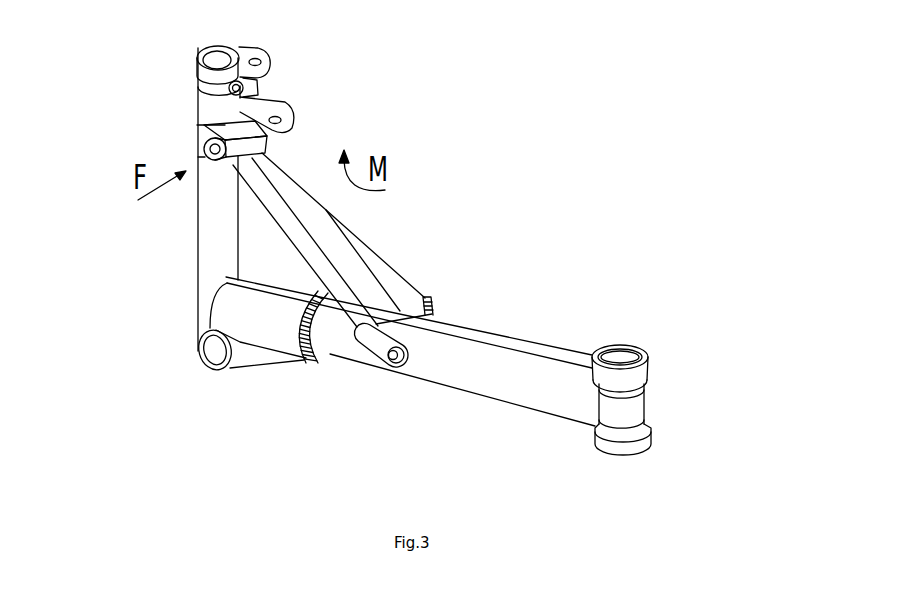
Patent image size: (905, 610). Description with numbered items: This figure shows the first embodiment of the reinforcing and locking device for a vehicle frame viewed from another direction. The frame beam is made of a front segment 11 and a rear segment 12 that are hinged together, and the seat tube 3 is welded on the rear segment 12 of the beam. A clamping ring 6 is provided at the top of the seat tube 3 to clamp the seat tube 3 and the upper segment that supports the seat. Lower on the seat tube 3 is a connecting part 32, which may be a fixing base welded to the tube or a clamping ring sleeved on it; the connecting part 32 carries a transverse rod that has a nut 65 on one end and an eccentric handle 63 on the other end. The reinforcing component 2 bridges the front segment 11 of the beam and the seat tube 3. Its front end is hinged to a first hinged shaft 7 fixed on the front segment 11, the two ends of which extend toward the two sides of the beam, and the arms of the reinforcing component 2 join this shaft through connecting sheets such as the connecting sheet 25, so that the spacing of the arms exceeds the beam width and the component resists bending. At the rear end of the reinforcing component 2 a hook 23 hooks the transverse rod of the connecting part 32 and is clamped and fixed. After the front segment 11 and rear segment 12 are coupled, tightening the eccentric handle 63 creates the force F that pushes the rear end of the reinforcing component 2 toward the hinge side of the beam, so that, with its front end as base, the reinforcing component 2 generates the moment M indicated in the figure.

The reinforcing component 2 is at (384, 265).
The seat tube 3 is at (198, 253).
The clamping ring 6 is at (194, 78).
The first hinged shaft 7 is at (390, 361).
The front segment 11 is at (499, 358).
The rear segment 12 is at (285, 343).
The hook 23 is at (281, 140).
The connecting sheet 25 is at (368, 343).
The connecting part 32 is at (203, 139).
The eccentric handle 63 is at (266, 110).
The nut 65 is at (208, 160).